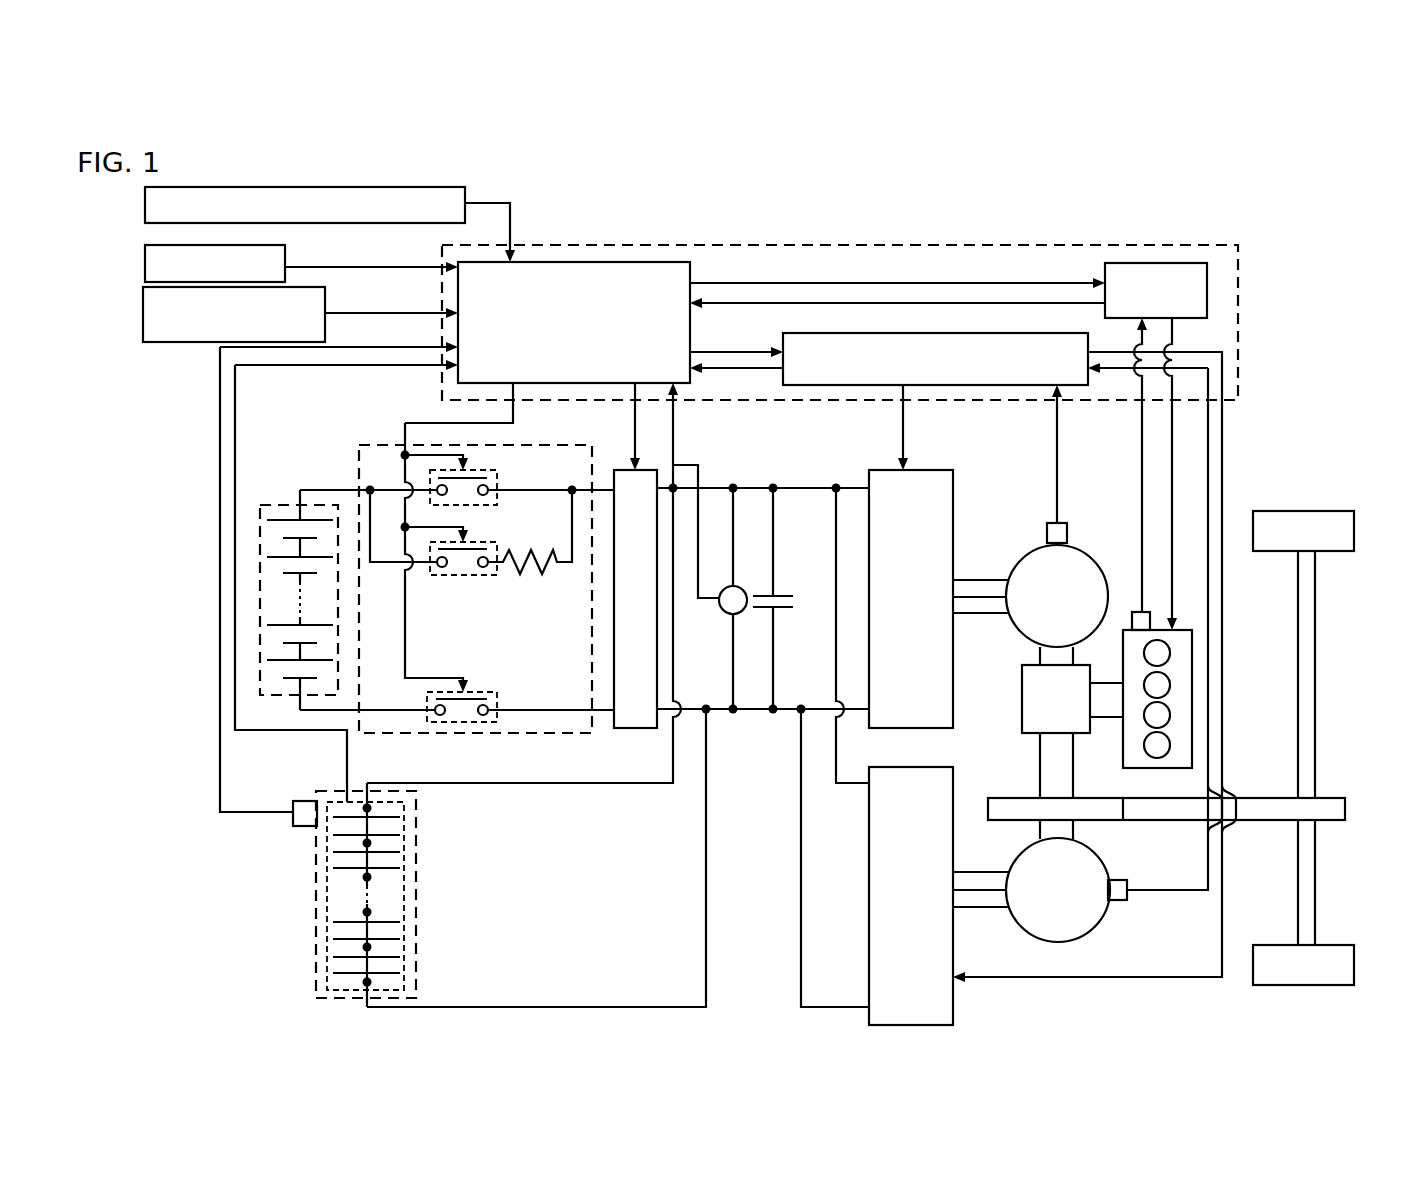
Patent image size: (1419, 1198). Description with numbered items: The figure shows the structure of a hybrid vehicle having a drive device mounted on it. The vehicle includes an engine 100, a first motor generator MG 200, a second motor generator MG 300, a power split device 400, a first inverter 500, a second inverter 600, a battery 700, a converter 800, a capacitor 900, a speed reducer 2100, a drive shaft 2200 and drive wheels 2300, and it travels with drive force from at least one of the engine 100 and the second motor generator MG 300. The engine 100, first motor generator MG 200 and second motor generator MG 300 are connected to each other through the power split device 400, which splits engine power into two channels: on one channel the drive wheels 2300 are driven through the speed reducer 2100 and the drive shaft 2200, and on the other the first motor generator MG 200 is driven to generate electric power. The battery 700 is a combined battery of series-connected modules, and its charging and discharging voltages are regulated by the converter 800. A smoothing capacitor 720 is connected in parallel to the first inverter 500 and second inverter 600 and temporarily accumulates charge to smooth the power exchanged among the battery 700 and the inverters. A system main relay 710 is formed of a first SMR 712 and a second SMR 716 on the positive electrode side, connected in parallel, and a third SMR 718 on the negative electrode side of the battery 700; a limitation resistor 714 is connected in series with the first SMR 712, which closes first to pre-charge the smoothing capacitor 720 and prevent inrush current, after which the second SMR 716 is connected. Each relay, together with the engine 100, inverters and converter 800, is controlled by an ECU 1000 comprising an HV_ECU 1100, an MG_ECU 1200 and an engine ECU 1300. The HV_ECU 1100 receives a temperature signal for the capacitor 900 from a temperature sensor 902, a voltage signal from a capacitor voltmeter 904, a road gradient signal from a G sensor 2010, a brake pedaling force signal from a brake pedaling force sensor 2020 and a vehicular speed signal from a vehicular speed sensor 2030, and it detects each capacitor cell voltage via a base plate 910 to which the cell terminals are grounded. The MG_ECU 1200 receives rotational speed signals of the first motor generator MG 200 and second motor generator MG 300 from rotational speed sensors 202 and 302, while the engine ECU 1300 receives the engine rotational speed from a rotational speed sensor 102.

The brake pedaling force sensor 2020 is at (467, 194).
The G sensor 2010 is at (286, 249).
The vehicular speed sensor 2030 is at (328, 297).
The ECU 1000 is at (853, 246).
The HV_ECU 1100 is at (692, 270).
The MG_ECU 1200 is at (1024, 318).
The engine ECU 1300 is at (1102, 269).
The system main relay 710 is at (358, 446).
The SMR (2) 716 is at (497, 479).
The SMR (1) 712 is at (484, 578).
The limitation resistor 714 is at (526, 574).
The SMR (3) 718 is at (497, 698).
The battery 700 is at (264, 503).
The converter 800 is at (642, 729).
The capacitor voltmeter 904 is at (720, 612).
The smoothing capacitor 720 is at (781, 616).
The inverter (1) 500 is at (953, 482).
The MG (1) 200 is at (1020, 552).
The rotational speed sensor 202 is at (1067, 523).
The power split device 400 is at (1022, 700).
The engine 100 is at (1122, 736).
The rotational speed sensor 102 is at (1138, 610).
The inverter (2) 600 is at (953, 782).
The MG (2) 300 is at (1094, 925).
The rotational speed sensor 302 is at (1115, 878).
The speed reducer 2100 is at (1258, 795).
The drive shaft 2200 is at (1317, 656).
The drive wheels 2300 is at (1318, 510).
The capacitor 900 is at (316, 962).
The temperature sensor 902 is at (306, 827).
The base plate 910 is at (416, 871).